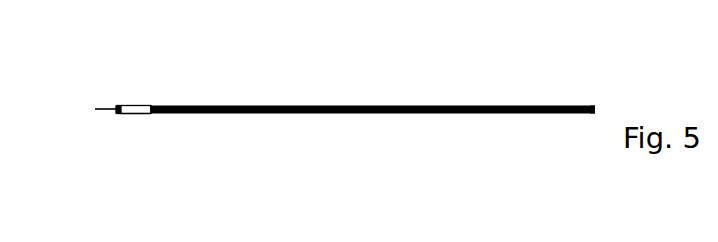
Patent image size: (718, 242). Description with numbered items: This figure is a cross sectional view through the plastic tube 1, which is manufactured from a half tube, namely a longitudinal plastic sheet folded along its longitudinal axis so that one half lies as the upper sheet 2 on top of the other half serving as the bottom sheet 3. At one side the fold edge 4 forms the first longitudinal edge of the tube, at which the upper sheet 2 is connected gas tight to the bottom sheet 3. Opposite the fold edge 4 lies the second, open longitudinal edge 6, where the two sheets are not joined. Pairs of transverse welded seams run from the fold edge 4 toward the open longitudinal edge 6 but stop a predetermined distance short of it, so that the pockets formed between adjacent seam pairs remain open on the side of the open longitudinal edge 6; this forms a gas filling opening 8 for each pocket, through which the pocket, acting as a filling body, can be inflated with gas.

The plastic tube 1 is at (296, 103).
The upper sheet 2 is at (137, 106).
The bottom sheet 3 is at (137, 114).
The fold edge 4 is at (598, 104).
The open longitudinal edge 6 is at (114, 107).
The gas filling opening 8 is at (88, 107).